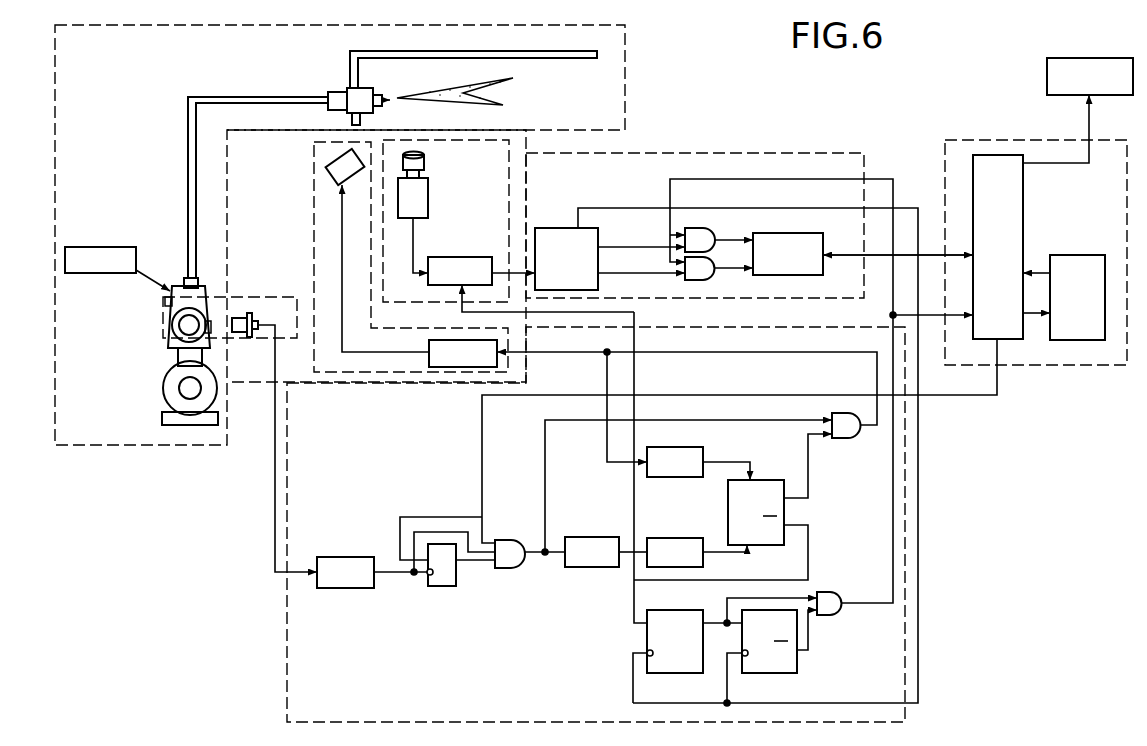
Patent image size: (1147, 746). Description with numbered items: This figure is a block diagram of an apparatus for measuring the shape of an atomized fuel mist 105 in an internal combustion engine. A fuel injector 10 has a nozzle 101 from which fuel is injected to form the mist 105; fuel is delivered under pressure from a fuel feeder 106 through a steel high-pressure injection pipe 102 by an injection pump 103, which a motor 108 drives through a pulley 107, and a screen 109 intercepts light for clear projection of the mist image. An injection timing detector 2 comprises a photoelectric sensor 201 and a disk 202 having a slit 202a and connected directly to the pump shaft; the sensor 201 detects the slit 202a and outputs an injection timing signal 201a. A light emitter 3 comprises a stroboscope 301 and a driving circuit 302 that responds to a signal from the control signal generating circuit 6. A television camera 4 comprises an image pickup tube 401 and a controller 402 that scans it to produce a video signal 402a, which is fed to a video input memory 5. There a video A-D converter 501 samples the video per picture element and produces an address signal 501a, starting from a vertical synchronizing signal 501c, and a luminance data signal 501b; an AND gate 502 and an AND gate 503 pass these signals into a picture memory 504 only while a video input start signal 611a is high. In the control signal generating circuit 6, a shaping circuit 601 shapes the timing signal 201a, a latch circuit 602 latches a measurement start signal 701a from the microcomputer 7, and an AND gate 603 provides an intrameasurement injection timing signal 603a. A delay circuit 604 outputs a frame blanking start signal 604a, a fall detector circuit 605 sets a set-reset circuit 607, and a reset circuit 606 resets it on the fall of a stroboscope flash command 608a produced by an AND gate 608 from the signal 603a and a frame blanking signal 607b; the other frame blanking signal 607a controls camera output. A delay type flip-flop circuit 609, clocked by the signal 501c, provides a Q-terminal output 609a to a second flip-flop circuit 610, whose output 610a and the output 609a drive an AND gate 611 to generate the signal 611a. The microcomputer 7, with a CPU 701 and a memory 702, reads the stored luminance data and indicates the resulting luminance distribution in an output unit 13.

The fuel injector 10 is at (626, 29).
The nozzle 101 is at (366, 88).
The high-pressure injection pipe 102 is at (188, 168).
The injection pump 103 is at (165, 300).
The atomized fuel mist 105 is at (513, 80).
The fuel feeder 106 is at (120, 247).
The pulley 107 is at (178, 358).
The motor 108 is at (163, 390).
The screen 109 is at (350, 52).
The injection timing detector 2 is at (297, 296).
The photoelectric sensor 201 is at (247, 318).
The injection timing signal 201a is at (275, 495).
The disk 202 is at (172, 325).
The slit 202a is at (207, 330).
The light emitter 3 is at (314, 225).
The stroboscope 301 is at (330, 165).
The stroboscope driving circuit 302 is at (429, 352).
The television camera 4 is at (510, 142).
The image pickup tube 401 is at (428, 190).
The controller 402 is at (440, 285).
The video signal 402a is at (500, 270).
The video input memory 5 is at (840, 148).
The video A-D converter 501 is at (555, 228).
The address signal 501a is at (662, 247).
The luminance data signal 501b is at (663, 273).
The vertical synchronizing signal 501c is at (635, 208).
The AND gate 502 is at (700, 228).
The AND gate 503 is at (703, 281).
The picture memory 504 is at (812, 233).
The control signal generating circuit 6 is at (287, 688).
The shaping circuit 601 is at (348, 550).
The latch circuit 602 is at (446, 586).
The AND gate 603 is at (508, 540).
The intrameasurement injection timing signal 603a is at (545, 556).
The delay circuit 604 is at (597, 533).
The frame blanking start signal 604a is at (630, 554).
The fall detector circuit 605 is at (660, 538).
The reset circuit 606 is at (700, 447).
The set-reset circuit 607 is at (728, 500).
The frame blanking signal 607a is at (730, 580).
The frame blanking signal 607b is at (808, 490).
The AND gate 608 is at (832, 418).
The stroboscope flash command 608a is at (800, 353).
The delay type flip-flop circuit 609 is at (660, 673).
The Q-terminal output 609a is at (718, 623).
The delay type flip-flop circuit 610 is at (752, 673).
The flip-flop output 610a is at (806, 655).
The AND gate 611 is at (835, 615).
The video input start signal 611a is at (730, 179).
The microcomputer 7 is at (970, 140).
The CPU 701 is at (1023, 190).
The measurement start signal 701a is at (997, 385).
The memory 702 is at (1085, 248).
The output unit 13 is at (1092, 58).